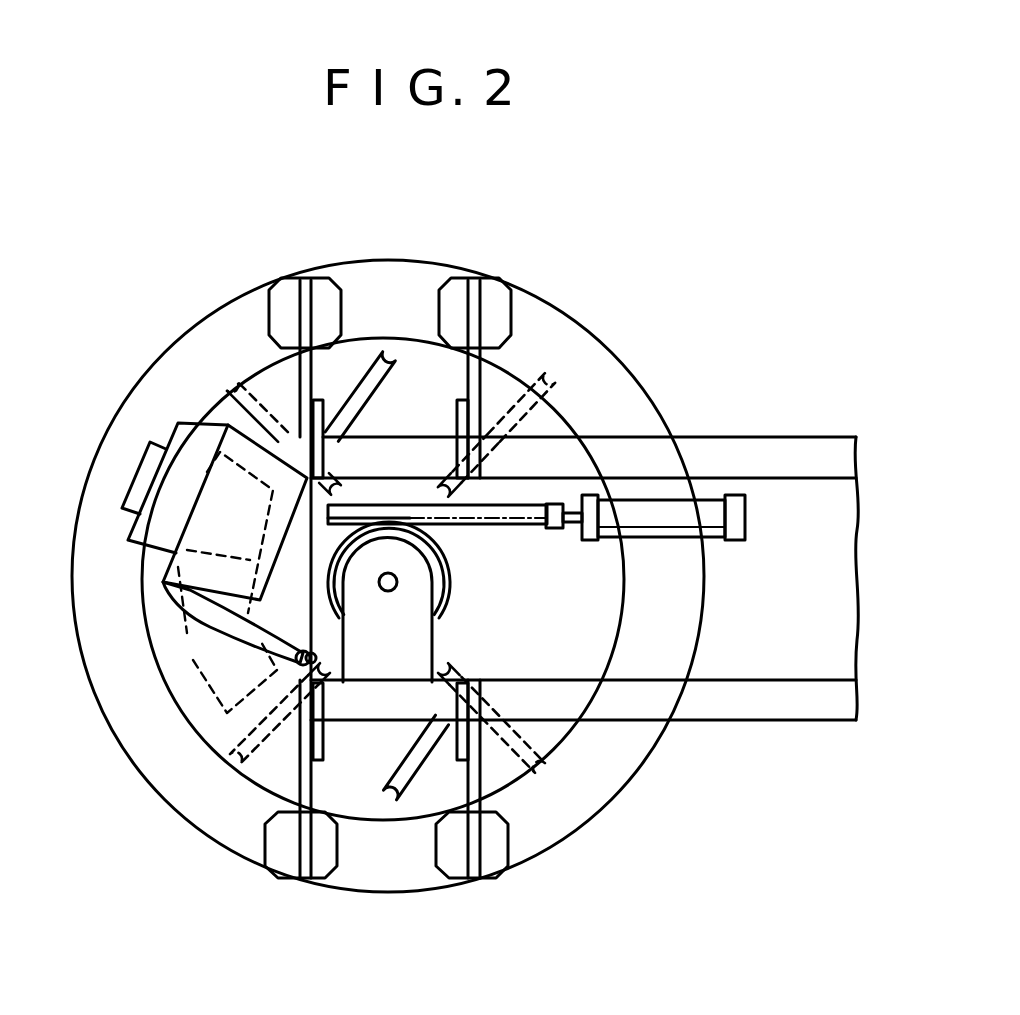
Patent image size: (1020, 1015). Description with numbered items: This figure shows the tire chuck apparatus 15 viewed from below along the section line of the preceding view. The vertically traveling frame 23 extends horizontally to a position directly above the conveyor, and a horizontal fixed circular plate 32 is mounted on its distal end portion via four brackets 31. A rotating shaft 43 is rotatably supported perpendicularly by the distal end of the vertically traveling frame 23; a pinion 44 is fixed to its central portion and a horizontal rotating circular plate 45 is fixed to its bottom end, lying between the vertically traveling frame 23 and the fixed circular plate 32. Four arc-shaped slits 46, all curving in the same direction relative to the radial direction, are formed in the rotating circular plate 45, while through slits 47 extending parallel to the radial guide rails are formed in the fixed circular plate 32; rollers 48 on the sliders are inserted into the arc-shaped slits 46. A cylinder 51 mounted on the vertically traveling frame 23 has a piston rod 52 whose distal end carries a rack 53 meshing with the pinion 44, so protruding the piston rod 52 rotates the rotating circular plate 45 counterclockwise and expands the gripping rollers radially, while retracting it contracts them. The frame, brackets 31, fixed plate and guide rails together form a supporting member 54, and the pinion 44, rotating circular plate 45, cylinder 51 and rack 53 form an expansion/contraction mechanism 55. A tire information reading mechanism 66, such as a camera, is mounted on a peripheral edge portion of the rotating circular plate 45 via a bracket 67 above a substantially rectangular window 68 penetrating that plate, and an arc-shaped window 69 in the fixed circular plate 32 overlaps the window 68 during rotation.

The tire chuck apparatus 15 is at (740, 432).
The vertically traveling frame 23 is at (817, 457).
The brackets 31 is at (483, 311).
The fixed circular plate 32 is at (592, 357).
The rotating shaft 43 is at (389, 591).
The pinion 44 is at (432, 528).
The rotating circular plate 45 is at (556, 731).
The arc-shaped slits 46 is at (391, 366).
The through slits 47 is at (232, 762).
The rollers 48 is at (302, 652).
The cylinder 51 is at (683, 517).
The piston rod 52 is at (570, 531).
The rack 53 is at (531, 514).
The supporting member 54 is at (643, 435).
The expansion/contraction mechanism 55 is at (748, 522).
The tire information reading mechanism 66 is at (237, 443).
The bracket 67 is at (142, 472).
The window 68 is at (198, 532).
The window 69 is at (193, 660).